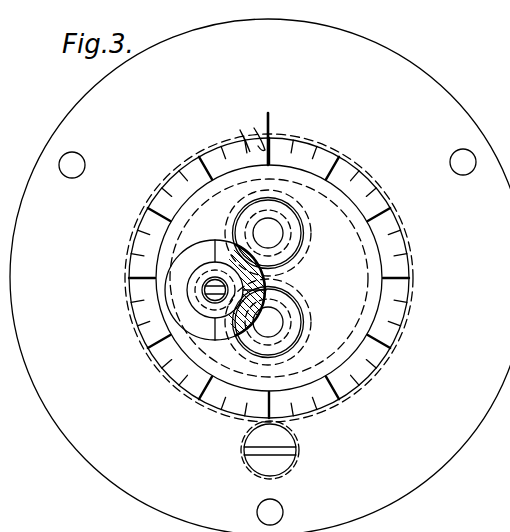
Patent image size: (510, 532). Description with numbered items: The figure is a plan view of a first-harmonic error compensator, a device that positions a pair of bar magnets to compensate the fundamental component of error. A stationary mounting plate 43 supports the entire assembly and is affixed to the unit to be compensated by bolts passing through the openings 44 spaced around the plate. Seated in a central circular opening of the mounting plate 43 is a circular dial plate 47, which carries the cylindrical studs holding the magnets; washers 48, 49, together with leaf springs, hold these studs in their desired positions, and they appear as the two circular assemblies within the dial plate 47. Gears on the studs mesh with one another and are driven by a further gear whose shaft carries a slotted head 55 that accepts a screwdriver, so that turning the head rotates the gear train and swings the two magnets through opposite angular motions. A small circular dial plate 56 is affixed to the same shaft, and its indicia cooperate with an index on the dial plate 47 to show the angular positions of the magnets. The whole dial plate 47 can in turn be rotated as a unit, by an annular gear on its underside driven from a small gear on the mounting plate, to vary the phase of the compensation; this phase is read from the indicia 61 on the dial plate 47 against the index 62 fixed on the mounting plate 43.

The stationary mounting plate 43 is at (445, 103).
The openings 44 is at (84, 163).
The circular dial plate 47 is at (327, 155).
The washer 48 is at (292, 254).
The washer 49 is at (288, 340).
The slotted head 55 is at (207, 297).
The small circular dial plate 56 is at (177, 272).
The indicia 61 is at (256, 132).
The index 62 is at (270, 121).